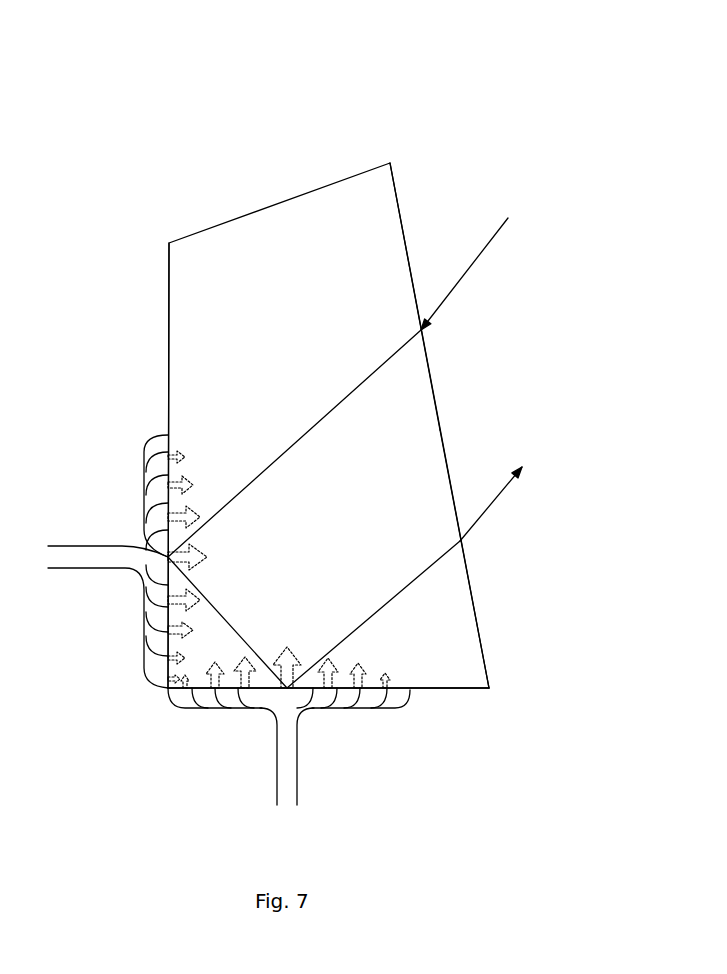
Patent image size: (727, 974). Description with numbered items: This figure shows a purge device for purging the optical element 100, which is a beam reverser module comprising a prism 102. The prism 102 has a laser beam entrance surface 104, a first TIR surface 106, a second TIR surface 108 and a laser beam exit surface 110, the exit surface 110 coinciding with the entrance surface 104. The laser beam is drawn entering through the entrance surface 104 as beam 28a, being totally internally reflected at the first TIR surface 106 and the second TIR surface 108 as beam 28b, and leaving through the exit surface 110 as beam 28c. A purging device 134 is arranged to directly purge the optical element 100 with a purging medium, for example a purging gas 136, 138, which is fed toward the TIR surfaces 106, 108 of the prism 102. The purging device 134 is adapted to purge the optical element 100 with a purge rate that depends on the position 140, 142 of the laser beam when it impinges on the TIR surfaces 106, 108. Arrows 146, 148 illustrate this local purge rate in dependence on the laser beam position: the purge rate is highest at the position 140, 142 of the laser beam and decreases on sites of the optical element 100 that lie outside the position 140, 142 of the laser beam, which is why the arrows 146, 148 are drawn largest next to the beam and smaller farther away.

The optical element 100 is at (328, 392).
The prism 102 is at (267, 232).
The laser beam entrance surface 104 is at (410, 218).
The first TIR surface 106 is at (168, 373).
The second TIR surface 108 is at (449, 702).
The laser beam exit surface 110 is at (495, 636).
The incoming light beam 28a is at (508, 222).
The internally reflected light beam 28b is at (354, 638).
The outgoing light beam 28c is at (505, 491).
The purging device 134 is at (229, 660).
The purging gas 136 is at (288, 768).
The purging gas 138 is at (88, 560).
The position of the laser beam 140 is at (143, 545).
The position of the laser beam 142 is at (275, 718).
The arrows illustrating local purge rate 146 is at (168, 471).
The arrows illustrating local purge rate 148 is at (358, 667).